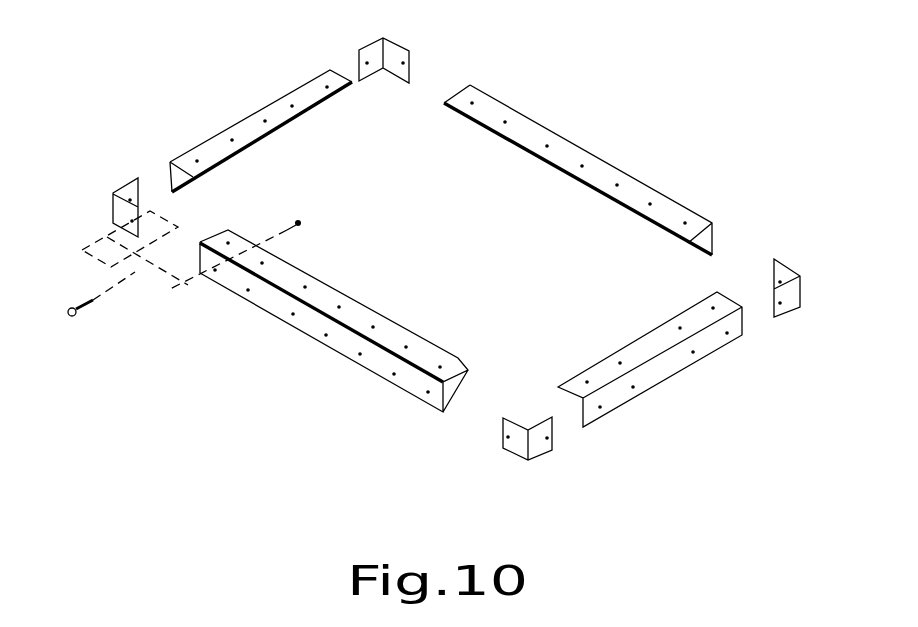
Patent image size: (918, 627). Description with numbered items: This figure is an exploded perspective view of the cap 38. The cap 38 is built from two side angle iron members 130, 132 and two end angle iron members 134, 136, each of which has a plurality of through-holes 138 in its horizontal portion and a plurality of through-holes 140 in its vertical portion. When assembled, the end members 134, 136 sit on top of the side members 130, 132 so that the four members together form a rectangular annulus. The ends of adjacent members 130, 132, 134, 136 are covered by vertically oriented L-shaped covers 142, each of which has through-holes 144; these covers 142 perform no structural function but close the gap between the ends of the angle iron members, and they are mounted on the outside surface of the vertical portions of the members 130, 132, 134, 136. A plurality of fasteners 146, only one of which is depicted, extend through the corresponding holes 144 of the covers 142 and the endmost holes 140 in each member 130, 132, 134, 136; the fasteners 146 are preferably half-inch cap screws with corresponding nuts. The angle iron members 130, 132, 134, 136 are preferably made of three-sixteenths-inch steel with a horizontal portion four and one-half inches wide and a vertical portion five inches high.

The cap 38 is at (551, 101).
The side angle iron member 130 is at (584, 148).
The side angle iron member 132 is at (344, 292).
The end angle iron member 134 is at (262, 144).
The end angle iron member 136 is at (650, 328).
The through-holes 138 is at (327, 86).
The through-holes 140 is at (727, 334).
The L-shaped covers 142 is at (372, 37).
The through-holes 144 is at (367, 63).
The fasteners 146 is at (80, 319).